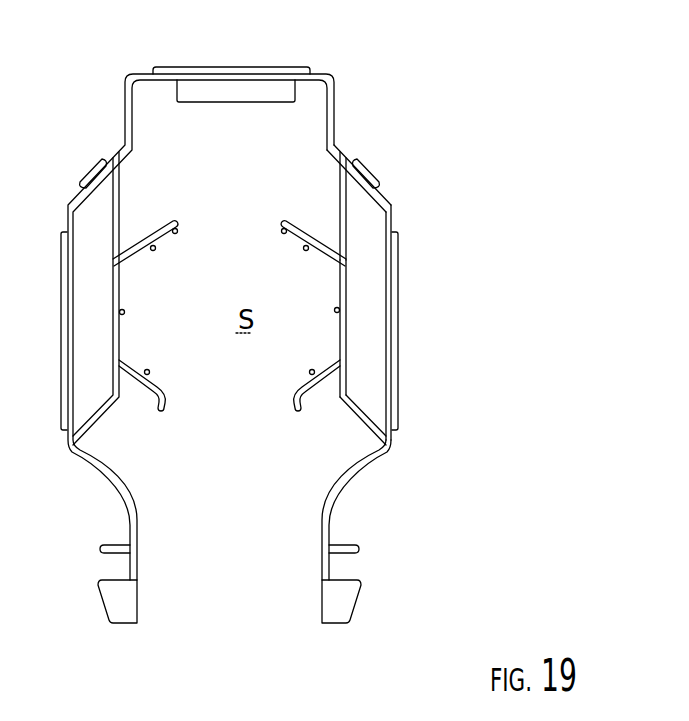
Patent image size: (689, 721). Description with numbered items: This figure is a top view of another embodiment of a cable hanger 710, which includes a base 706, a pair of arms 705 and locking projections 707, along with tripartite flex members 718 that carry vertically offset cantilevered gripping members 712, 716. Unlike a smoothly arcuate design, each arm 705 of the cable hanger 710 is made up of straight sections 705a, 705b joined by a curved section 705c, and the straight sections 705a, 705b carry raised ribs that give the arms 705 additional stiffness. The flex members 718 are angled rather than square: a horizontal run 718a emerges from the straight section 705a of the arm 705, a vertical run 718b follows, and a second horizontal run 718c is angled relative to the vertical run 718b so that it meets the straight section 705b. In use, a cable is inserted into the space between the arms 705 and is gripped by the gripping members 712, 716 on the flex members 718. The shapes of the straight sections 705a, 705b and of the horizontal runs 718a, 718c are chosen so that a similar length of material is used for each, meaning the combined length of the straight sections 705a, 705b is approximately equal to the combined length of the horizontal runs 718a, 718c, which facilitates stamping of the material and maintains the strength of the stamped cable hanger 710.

The arms 705 is at (295, 348).
The straight section 705a is at (383, 194).
The straight section 705b is at (392, 437).
The curved section 705c is at (372, 462).
The base 706 is at (312, 74).
The locking projections 707 is at (343, 602).
The cable hanger 710 is at (329, 318).
The gripping member 712 is at (298, 226).
The gripping member 716 is at (298, 388).
The flex members 718 is at (466, 274).
The horizontal run 718a is at (345, 208).
The vertical run 718b is at (347, 298).
The horizontal run 718c is at (365, 408).